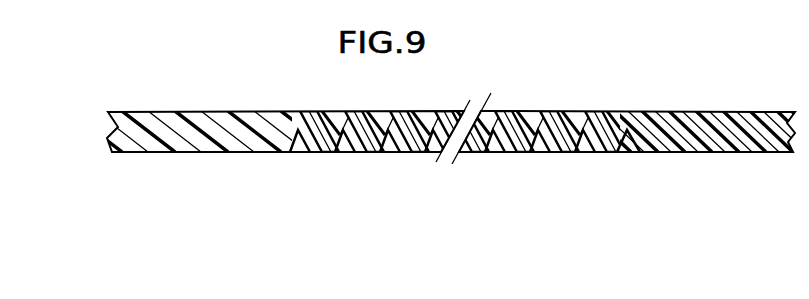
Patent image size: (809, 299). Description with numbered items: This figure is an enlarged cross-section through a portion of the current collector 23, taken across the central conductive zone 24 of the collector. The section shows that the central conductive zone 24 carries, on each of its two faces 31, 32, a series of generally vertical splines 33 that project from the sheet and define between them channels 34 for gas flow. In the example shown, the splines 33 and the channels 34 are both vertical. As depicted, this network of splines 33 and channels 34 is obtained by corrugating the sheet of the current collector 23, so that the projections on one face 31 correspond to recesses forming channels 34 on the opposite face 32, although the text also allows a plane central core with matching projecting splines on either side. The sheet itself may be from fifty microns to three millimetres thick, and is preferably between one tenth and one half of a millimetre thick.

The current collector 23 is at (128, 129).
The face 31 is at (199, 160).
The face 32 is at (249, 108).
The spline 33 is at (341, 128).
The channel 34 is at (349, 134).
The central conductive zone 24 is at (448, 108).